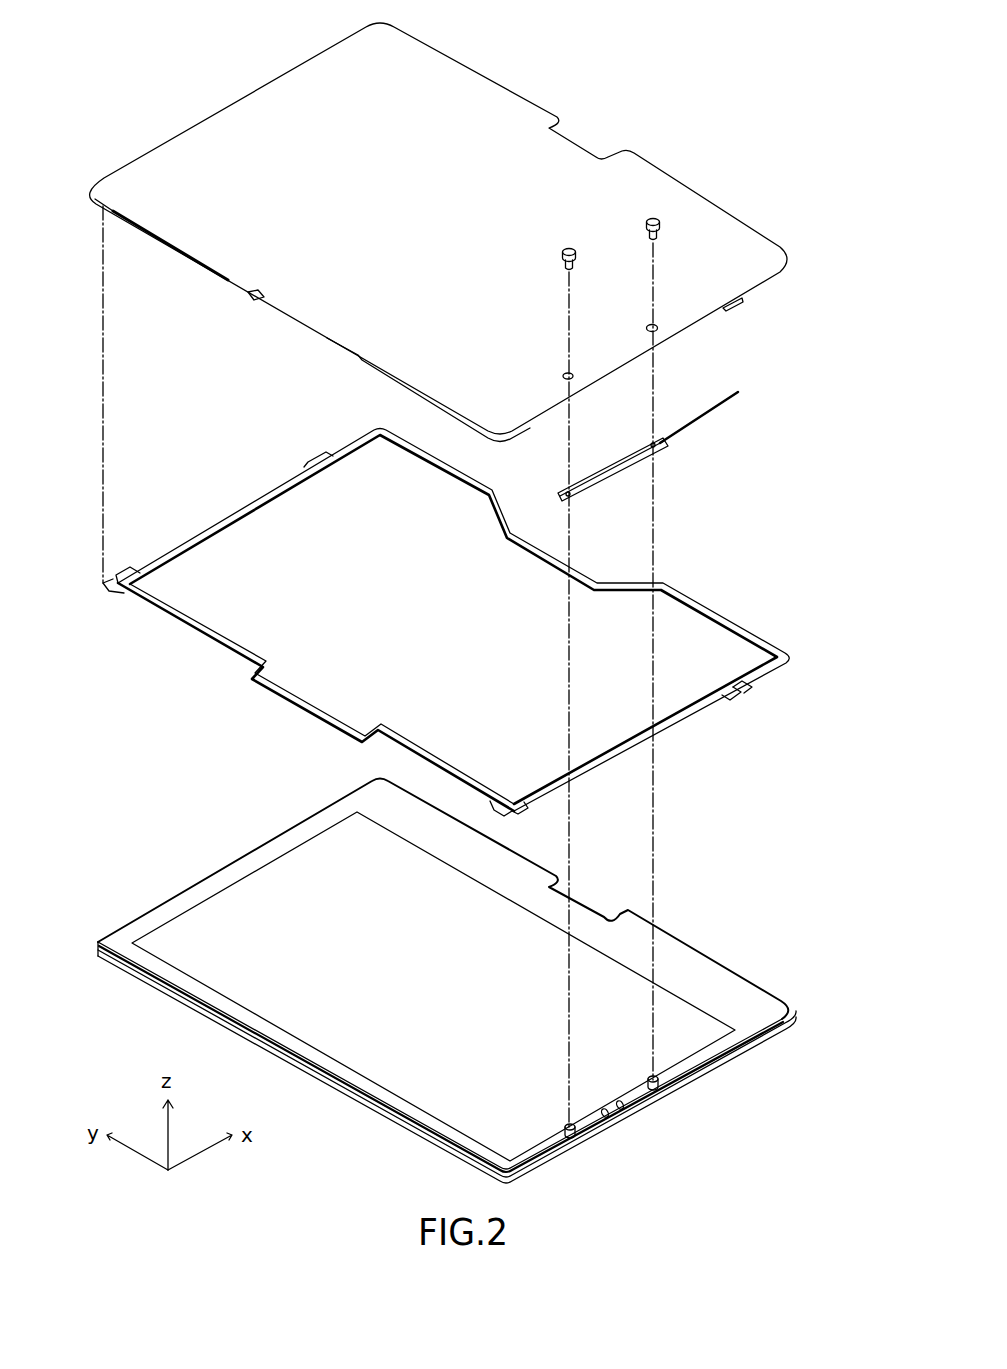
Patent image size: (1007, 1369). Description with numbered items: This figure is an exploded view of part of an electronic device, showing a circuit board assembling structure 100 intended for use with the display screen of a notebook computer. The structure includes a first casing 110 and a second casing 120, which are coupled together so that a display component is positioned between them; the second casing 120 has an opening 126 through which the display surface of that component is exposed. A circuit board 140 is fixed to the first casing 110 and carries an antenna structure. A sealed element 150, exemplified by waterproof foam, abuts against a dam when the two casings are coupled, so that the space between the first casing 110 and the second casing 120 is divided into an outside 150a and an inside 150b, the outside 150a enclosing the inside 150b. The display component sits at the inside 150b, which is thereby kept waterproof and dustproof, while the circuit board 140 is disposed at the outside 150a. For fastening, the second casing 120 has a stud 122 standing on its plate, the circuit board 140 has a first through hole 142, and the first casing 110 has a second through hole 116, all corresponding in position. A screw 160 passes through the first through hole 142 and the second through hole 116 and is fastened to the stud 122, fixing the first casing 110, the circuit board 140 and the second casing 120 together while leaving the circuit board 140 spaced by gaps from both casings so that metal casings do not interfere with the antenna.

The circuit board assembling structure 100 is at (793, 1196).
The first casing 110 is at (722, 222).
The second through hole 116 is at (658, 330).
The second casing 120 is at (462, 981).
The stud 122 is at (666, 1087).
The opening 126 is at (672, 1004).
The circuit board 140 is at (617, 467).
The first through hole 142 is at (662, 447).
The sealed element 150 is at (470, 623).
The outside 150a is at (703, 588).
The inside 150b is at (703, 641).
The screw 160 is at (657, 216).